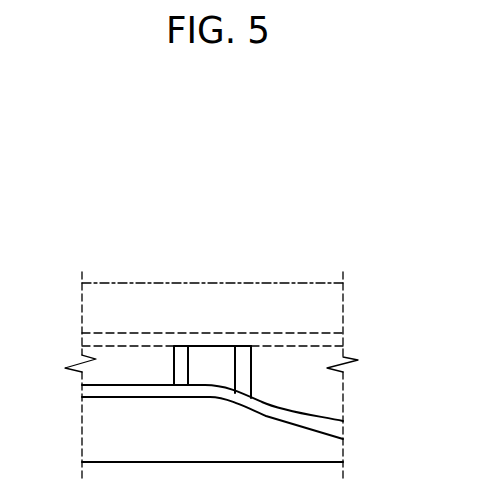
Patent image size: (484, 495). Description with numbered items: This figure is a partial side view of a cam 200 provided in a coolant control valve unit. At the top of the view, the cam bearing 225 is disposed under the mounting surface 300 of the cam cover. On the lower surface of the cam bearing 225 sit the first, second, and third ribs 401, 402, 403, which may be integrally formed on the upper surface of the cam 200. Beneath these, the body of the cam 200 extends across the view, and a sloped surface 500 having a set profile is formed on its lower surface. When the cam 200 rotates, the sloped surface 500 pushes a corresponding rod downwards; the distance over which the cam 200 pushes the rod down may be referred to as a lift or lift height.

The cam 200 is at (125, 424).
The cam bearing 225 is at (328, 341).
The mounting surface 300 is at (322, 299).
The first rib 401 is at (178, 360).
The second rib 402 is at (242, 360).
The third rib 403 is at (213, 363).
The sloped surface 500 is at (290, 427).